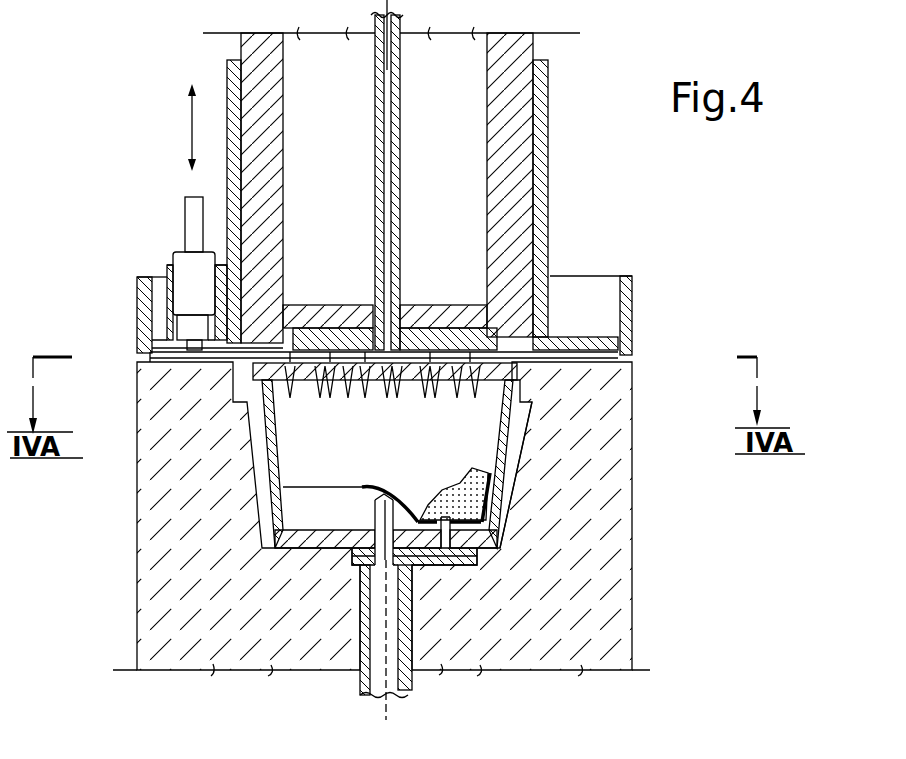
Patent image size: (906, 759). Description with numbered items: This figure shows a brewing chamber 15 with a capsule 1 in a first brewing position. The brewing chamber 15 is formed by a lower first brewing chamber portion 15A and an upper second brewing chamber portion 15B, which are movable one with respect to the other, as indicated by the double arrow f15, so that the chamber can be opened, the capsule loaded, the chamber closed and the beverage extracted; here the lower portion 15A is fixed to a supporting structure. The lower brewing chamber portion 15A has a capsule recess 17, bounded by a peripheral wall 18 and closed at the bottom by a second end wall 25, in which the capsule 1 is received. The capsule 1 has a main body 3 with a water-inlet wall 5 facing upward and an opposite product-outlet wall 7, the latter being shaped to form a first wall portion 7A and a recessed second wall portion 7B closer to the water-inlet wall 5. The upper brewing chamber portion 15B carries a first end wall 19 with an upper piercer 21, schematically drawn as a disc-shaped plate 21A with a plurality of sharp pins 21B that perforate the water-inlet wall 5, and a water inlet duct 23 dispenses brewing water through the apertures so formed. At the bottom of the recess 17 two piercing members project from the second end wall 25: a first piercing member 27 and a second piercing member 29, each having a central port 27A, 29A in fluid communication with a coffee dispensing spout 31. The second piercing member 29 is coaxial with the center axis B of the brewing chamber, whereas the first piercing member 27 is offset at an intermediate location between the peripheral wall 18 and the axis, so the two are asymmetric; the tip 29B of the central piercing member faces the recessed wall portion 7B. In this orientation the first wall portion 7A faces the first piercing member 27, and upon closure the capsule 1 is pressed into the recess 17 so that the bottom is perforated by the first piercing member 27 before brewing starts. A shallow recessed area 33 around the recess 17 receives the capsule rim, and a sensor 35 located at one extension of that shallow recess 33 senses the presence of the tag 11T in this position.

The capsule 1 is at (391, 484).
The main body 3 is at (405, 438).
The water-inlet wall 5 is at (280, 332).
The product-outlet wall 7 is at (336, 502).
The first wall portion 7A is at (496, 500).
The second wall portion 7B is at (303, 497).
The tag 11T is at (178, 366).
The brewing chamber 15 is at (658, 528).
The first brewing chamber portion 15A is at (143, 458).
The second brewing chamber portion 15B is at (550, 190).
The capsule recess 17 is at (268, 528).
The peripheral wall 18 is at (522, 452).
The first end wall 19 is at (543, 307).
The upper piercer 21 is at (416, 338).
The disc-shaped plate 21A is at (323, 326).
The sharp projections or pins 21B is at (522, 455).
The water inlet duct 23 is at (400, 207).
The second end wall 25 is at (290, 548).
The first piercing member 27 is at (448, 500).
The central port 27A is at (447, 560).
The second piercing member 29 is at (356, 527).
The central port 29A is at (388, 558).
The piercing tip 29B is at (402, 474).
The coffee dispensing spout 31 is at (360, 683).
The shallow recessed area 33 is at (590, 362).
The sensor 35 is at (183, 263).
The movement direction f15 is at (189, 130).
The center axis B is at (393, 647).